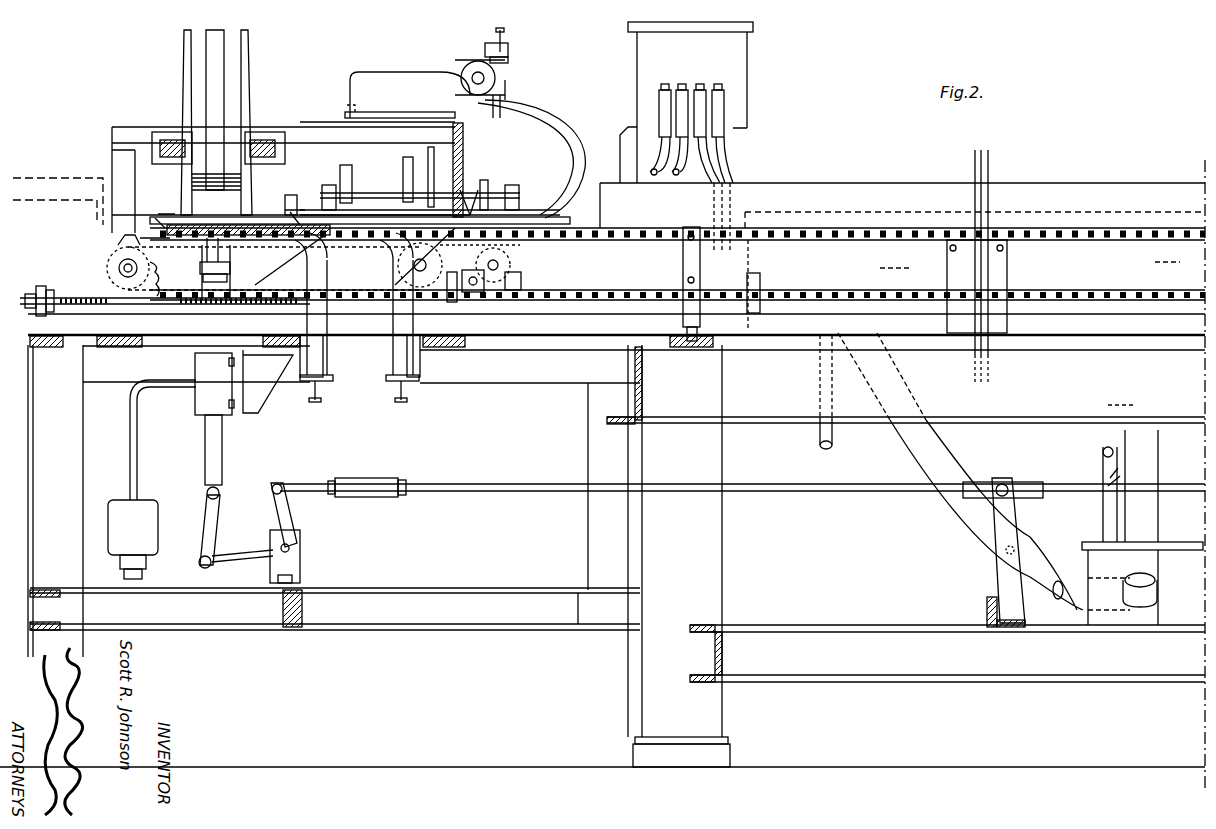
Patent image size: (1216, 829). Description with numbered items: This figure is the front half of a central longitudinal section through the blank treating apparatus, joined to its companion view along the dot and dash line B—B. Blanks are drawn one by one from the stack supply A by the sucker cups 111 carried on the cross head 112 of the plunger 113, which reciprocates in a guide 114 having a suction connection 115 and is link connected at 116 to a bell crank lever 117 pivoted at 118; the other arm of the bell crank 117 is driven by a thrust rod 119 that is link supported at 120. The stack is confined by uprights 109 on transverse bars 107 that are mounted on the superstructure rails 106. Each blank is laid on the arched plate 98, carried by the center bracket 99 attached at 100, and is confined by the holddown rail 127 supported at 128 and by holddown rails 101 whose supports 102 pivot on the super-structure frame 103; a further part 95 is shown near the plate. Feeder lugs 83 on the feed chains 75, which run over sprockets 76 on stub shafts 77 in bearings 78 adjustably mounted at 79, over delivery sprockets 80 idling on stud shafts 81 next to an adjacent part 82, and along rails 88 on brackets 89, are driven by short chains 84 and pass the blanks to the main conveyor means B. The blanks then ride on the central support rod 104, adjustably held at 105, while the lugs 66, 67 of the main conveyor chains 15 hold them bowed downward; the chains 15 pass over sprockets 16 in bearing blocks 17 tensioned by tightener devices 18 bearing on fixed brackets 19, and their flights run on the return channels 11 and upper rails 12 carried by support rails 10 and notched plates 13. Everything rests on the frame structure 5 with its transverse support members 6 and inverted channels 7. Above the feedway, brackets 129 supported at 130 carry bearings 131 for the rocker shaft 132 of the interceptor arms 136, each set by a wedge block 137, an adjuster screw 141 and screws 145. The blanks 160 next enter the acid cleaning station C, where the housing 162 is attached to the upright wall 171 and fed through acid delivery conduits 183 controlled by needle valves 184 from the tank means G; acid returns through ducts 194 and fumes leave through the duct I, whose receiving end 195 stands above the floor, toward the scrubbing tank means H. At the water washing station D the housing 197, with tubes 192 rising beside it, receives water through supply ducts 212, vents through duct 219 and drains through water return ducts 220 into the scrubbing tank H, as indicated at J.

The frame structure 5 is at (342, 622).
The transverse support members 6 is at (120, 348).
The support channels 7 is at (510, 338).
The longitudinal support rails 10 is at (1128, 268).
The chain return channels 11 is at (645, 262).
The supporting rails 12 is at (595, 248).
The notched plates 13 is at (762, 270).
The main conveyor chains 15 is at (915, 262).
The sprockets 16 is at (515, 258).
The bearing blocks 17 is at (352, 340).
The tightener devices 18 is at (300, 285).
The fixed brackets 19 is at (365, 222).
The chain lugs 66 is at (607, 226).
The chain lugs 67 is at (565, 268).
The initial feed conveyor chains 75 is at (272, 306).
The sprockets 76 is at (107, 262).
The stub shafts 77 is at (100, 300).
The bearings 78 is at (160, 278).
The adjustable mounting 79 is at (42, 286).
The sprockets 80 is at (510, 270).
The stud shafts 81 is at (485, 296).
The bearing 82 is at (518, 296).
The feeder lugs 83 is at (118, 242).
The short chains 84 is at (452, 302).
The supporting rails 88 is at (202, 262).
The brackets 89 is at (280, 262).
The bracket 95 is at (172, 225).
The arched plate 98 is at (488, 192).
The center bracket 99 is at (465, 192).
The bracket attachment 100 is at (395, 365).
The holddown rails 101 is at (295, 205).
The holddown rail supports 102 is at (336, 190).
The super-structure frame 103 is at (112, 157).
The longitudinal support rod 104 is at (652, 228).
The vertically adjustable support 105 is at (683, 318).
The longitudinal supporting rails 106 is at (128, 127).
The transverse support bars 107 is at (165, 135).
The stack uprights 109 is at (224, 48).
The sucker cups 111 is at (213, 238).
The cross head 112 is at (205, 318).
The plunger 113 is at (205, 340).
The guide 114 is at (195, 395).
The suction source connection 115 is at (135, 445).
The link connection 116 is at (206, 493).
The bell crank lever 117 is at (248, 545).
The pivot 118 is at (300, 540).
The thrust rod 119 is at (430, 484).
The link support 120 is at (997, 547).
The holddown rail 127 is at (335, 185).
The holddown rail support 128 is at (455, 160).
The brackets 129 is at (392, 65).
The bracket support 130 is at (358, 112).
The bearings 131 is at (470, 58).
The rocker shaft 132 is at (498, 78).
The interceptor arm 136 is at (555, 140).
The wedge block 137 is at (505, 105).
The adjuster screw 141 is at (510, 40).
The screws 145 is at (510, 58).
The blanks 160 is at (192, 178).
The acid treating housing 162 is at (745, 212).
The upright wall 171 is at (598, 183).
The acid delivery conduits 183 is at (660, 137).
The needle valves 184 is at (718, 116).
The tubes 192 is at (975, 172).
The acid return ducts 194 is at (818, 435).
The duct receiving end 195 is at (852, 280).
The water washing housing 197 is at (1052, 212).
The water supply ducts 212 is at (988, 172).
The duct 219 is at (1135, 508).
The water return ducts 220 is at (1108, 447).
The stack supply A is at (215, 105).
The conveyor means B is at (905, 232).
The acid cleaning station C is at (785, 212).
The water washing station D is at (1105, 228).
The tank means G is at (755, 80).
The scrubbing tank means H is at (1177, 620).
The fume return duct I is at (900, 460).
The drain connection J is at (1115, 485).